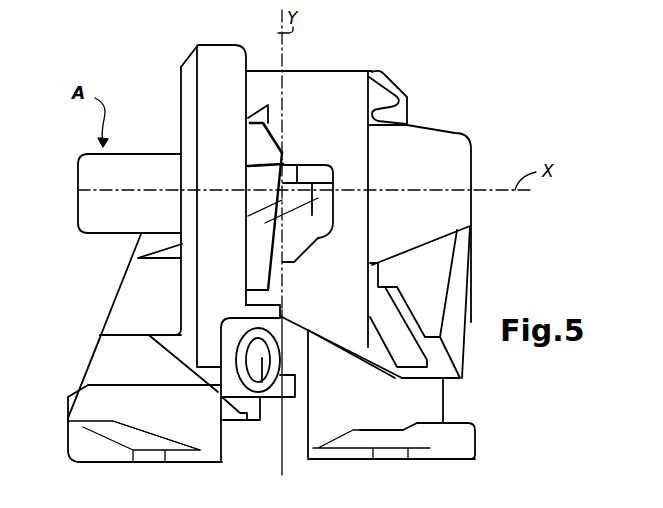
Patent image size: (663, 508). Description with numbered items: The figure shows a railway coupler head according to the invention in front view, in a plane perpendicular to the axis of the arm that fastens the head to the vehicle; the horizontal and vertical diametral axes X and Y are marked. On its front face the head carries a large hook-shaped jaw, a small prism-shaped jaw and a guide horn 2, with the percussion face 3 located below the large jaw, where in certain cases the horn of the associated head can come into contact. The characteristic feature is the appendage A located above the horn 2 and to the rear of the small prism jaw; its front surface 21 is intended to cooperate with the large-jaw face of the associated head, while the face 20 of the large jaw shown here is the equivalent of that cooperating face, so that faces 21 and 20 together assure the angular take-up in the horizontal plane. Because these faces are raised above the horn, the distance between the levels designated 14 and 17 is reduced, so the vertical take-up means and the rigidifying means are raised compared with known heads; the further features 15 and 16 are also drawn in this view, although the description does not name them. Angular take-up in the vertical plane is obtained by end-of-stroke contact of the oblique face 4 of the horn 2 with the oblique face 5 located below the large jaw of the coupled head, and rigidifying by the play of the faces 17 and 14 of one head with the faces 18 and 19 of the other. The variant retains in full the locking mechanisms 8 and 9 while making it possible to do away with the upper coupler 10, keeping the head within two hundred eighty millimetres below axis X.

The guide horn 2 is at (145, 423).
The percussion face 3 is at (391, 394).
The oblique face of the horn 4 is at (140, 433).
The oblique face below the large jaw 5 is at (420, 437).
The locking mechanism 8 is at (255, 155).
The locking mechanism 9 is at (296, 193).
The upper coupler 10 is at (262, 380).
The rigidifying face 14 is at (70, 421).
The slots 15 is at (157, 357).
The ribs 16 is at (438, 347).
The rigidifying face 17 is at (128, 382).
The rigidifying face 18 is at (452, 380).
The rigidifying face 19 is at (462, 419).
The front face of the large jaw 20 is at (419, 209).
The front surface of the appendage 21 is at (129, 193).